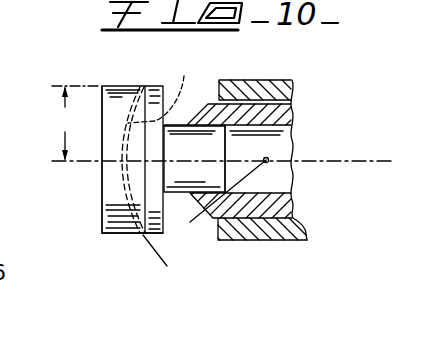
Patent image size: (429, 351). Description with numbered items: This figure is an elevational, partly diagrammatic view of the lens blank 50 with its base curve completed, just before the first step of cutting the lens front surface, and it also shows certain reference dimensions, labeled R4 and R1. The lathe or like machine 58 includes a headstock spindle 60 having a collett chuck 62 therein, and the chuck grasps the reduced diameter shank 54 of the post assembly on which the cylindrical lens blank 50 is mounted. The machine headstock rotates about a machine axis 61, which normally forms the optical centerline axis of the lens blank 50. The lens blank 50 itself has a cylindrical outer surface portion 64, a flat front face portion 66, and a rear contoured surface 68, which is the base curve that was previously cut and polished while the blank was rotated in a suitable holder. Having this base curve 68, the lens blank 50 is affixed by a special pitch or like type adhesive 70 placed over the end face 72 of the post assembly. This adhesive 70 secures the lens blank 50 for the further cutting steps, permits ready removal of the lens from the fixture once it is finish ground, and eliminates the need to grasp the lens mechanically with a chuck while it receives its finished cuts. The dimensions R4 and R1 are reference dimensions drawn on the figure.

The lens blank 50 is at (126, 258).
The shank portion 54 is at (194, 159).
The lathe or like machine 58 is at (313, 121).
The headstock spindle 60 is at (260, 228).
The machine axis 61 is at (377, 163).
The collett chuck 62 is at (280, 207).
The cylindrical outer surface portion 64 is at (118, 234).
The flat front face portion 66 is at (101, 118).
The rear contoured surface 68 is at (163, 88).
The adhesive 70 is at (161, 248).
The end face 72 is at (112, 180).
The radius R4 is at (75, 123).
The radius R1 is at (165, 252).